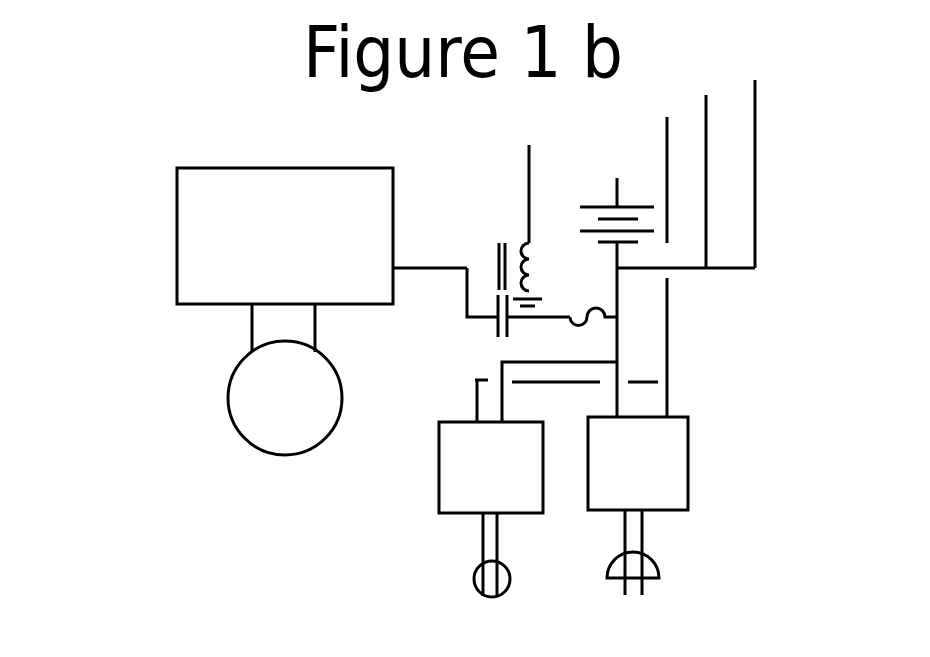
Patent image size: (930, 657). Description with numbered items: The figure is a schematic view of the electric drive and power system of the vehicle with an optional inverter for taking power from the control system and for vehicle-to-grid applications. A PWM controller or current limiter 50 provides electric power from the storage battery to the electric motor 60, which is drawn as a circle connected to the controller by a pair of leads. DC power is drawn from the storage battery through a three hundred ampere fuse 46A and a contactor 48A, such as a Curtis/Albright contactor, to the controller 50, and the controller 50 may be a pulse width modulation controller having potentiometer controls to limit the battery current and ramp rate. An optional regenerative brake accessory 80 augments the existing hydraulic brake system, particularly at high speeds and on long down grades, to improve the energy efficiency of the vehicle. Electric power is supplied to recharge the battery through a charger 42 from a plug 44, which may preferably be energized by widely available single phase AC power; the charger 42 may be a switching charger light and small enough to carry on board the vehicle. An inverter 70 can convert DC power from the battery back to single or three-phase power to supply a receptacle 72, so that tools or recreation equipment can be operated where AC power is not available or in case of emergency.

The regenerative brake accessory 80 is at (113, 250).
The PWM controller or current limiter 50 is at (298, 256).
The electric motor 60 is at (298, 412).
The contactor 48A is at (492, 297).
The fuse 46A is at (588, 310).
The inverter 70 is at (500, 478).
The charger 42 is at (652, 474).
The receptacle 72 is at (477, 563).
The plug 44 is at (652, 560).